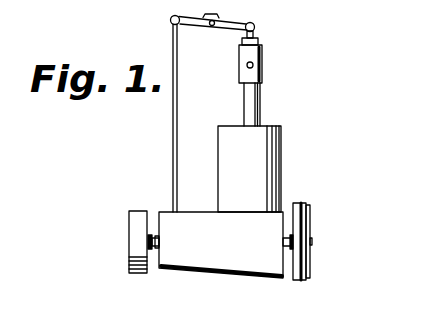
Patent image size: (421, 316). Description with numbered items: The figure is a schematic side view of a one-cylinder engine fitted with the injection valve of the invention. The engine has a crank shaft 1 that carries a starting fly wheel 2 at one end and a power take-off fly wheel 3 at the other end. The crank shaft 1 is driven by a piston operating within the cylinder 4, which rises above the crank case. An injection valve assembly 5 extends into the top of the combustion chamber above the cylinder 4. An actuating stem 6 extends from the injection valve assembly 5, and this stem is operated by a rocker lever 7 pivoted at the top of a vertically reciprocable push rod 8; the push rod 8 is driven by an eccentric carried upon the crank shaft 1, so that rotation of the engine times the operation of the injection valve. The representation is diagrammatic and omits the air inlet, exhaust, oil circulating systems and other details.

The crank shaft 1 is at (160, 242).
The starting fly wheel 2 is at (296, 207).
The power take-off fly wheel 3 is at (130, 236).
The cylinder 4 is at (267, 150).
The injection valve assembly 5 is at (263, 68).
The actuating stem 6 is at (254, 32).
The rocker lever 7 is at (232, 24).
The push rod 8 is at (173, 133).